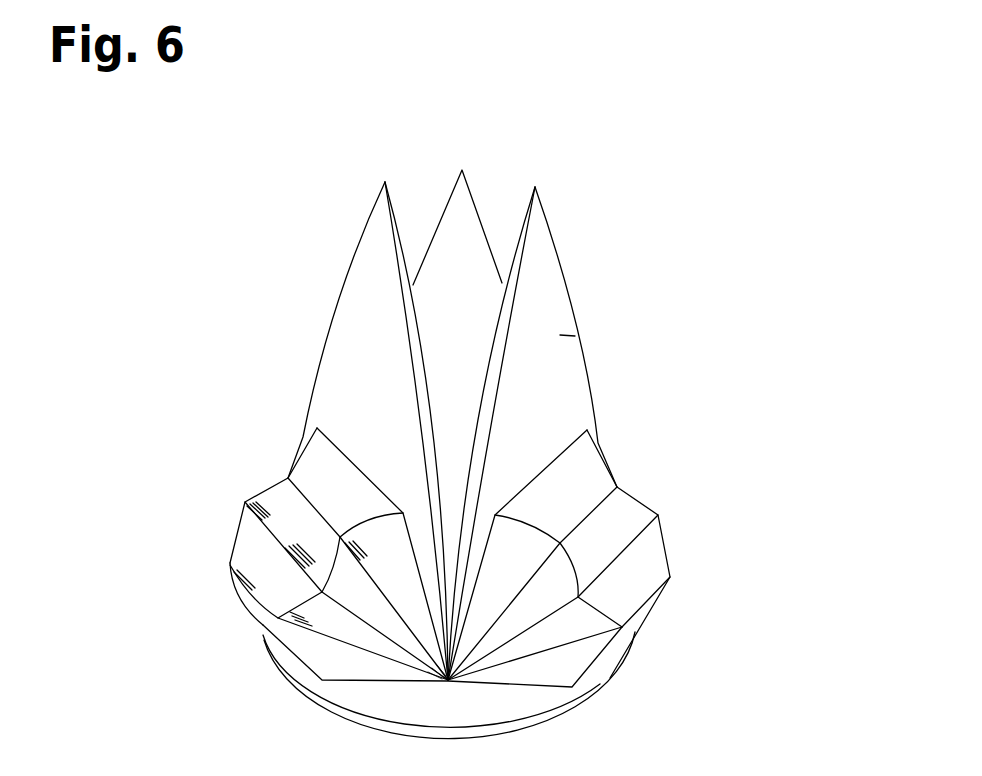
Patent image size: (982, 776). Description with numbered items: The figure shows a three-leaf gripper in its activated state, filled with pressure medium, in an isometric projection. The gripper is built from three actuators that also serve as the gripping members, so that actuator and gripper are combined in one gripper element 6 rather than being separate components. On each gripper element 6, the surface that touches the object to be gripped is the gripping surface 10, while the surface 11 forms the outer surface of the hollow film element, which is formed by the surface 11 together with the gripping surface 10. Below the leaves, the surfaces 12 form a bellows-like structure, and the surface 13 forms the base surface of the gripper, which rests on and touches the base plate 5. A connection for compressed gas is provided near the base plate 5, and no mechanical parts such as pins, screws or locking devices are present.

The gripper element 6 is at (410, 215).
The gripping surface 10 is at (412, 326).
The outer surface 11 is at (557, 334).
The bellows-like surfaces 12 is at (285, 502).
The base surface 13 is at (278, 635).
The base plate 5 is at (478, 705).